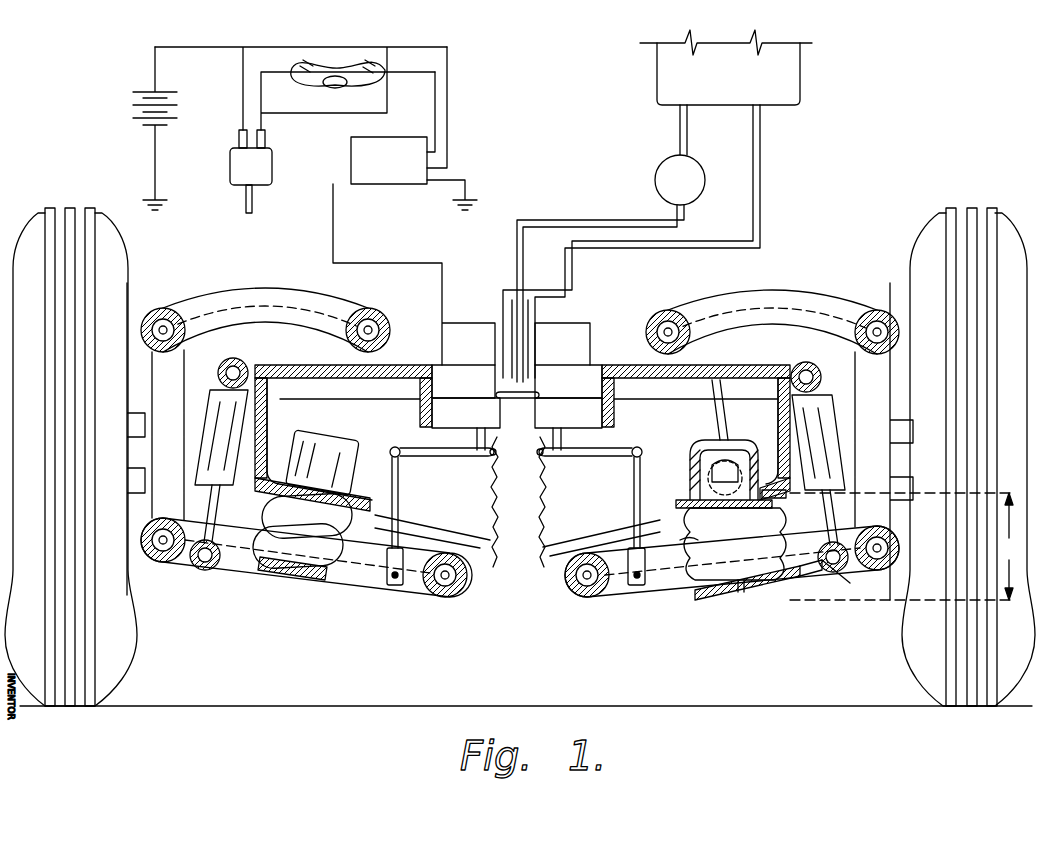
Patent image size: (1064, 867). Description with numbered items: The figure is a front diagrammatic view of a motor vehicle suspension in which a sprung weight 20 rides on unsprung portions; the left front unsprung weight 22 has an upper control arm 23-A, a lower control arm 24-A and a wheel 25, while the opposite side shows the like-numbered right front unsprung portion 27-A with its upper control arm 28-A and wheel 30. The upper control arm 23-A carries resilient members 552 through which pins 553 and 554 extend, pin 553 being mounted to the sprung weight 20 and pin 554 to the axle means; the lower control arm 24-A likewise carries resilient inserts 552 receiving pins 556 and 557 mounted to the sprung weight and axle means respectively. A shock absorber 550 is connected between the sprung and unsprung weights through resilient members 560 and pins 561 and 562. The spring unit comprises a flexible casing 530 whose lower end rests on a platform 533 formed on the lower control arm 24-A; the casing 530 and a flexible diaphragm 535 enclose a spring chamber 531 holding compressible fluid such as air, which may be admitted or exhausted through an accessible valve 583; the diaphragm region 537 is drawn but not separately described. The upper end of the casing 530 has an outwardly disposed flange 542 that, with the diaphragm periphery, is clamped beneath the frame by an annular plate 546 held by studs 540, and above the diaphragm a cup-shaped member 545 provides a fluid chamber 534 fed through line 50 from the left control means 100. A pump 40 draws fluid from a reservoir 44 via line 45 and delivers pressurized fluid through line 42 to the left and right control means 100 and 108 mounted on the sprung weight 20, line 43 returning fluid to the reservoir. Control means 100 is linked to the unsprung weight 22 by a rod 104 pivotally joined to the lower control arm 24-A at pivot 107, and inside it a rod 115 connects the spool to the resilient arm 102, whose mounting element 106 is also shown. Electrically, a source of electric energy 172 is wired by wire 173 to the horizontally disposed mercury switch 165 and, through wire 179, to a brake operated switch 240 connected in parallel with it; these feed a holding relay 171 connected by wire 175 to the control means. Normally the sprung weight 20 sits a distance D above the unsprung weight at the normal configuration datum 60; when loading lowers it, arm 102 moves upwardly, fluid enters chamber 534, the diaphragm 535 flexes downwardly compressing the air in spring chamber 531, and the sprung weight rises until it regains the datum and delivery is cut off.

The mercury switch 165 is at (346, 63).
The wire 173 is at (188, 48).
The source of electric energy 172 is at (140, 105).
The brake operated switch 240 is at (229, 163).
The wire 179 is at (447, 128).
The holding relay 171 is at (393, 168).
The wire 175 is at (450, 243).
The reservoir 44 is at (783, 92).
The line 45 is at (682, 153).
The pump 40 is at (658, 182).
The line 42 is at (555, 222).
The line 43 is at (760, 217).
The right front control means 108 is at (452, 370).
The left front control means 100 is at (595, 367).
The left upper control arm 28-A is at (262, 272).
The upper control arm 23-A is at (832, 279).
The left lower control arm 27-A is at (228, 574).
The lower control arm 24-A is at (630, 590).
The line 50 is at (345, 393).
The rod 115 is at (430, 450).
The lever pivot 106 is at (393, 453).
The resilient arm 102 is at (400, 453).
The pivot 107 is at (628, 582).
The rod 104 is at (400, 492).
The sprung weight portion 20 is at (525, 556).
The left front unsprung weight portion 22 is at (659, 600).
The shock absorber 550 is at (222, 372).
The resilient members 552 is at (662, 320).
The pin 553 is at (712, 278).
The pin 554 is at (905, 300).
The pin 556 is at (578, 578).
The pin 557 is at (875, 575).
The resilient members 560 is at (802, 365).
The pin 561 is at (790, 373).
The normal configuration datum 60 is at (918, 492).
The studs 540 is at (390, 587).
The flexible casing 530 is at (748, 523).
The cup-shaped member 545 is at (752, 438).
The fluid chamber 534 is at (712, 432).
The flexible diaphragm 535 is at (667, 455).
The flange 542 is at (690, 502).
The annular plate 546 is at (775, 495).
The diaphragm fold 537 is at (695, 540).
The spring chamber 531 is at (780, 597).
The valve 583 is at (745, 600).
The platform 533 is at (823, 598).
The pin 562 is at (847, 585).
The wheel 30 is at (122, 630).
The wheel 25 is at (918, 640).
The normal configuration distance D is at (902, 546).